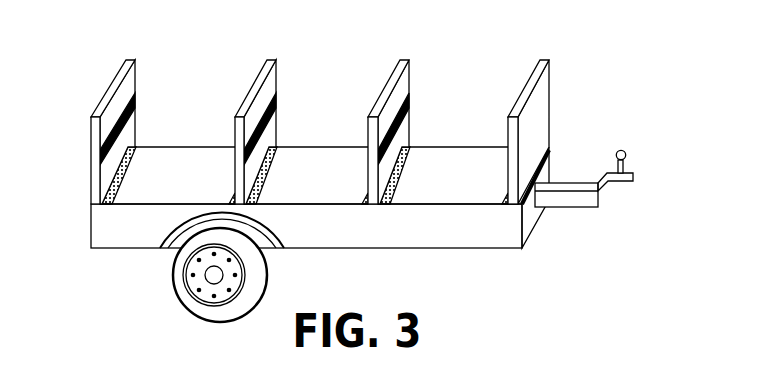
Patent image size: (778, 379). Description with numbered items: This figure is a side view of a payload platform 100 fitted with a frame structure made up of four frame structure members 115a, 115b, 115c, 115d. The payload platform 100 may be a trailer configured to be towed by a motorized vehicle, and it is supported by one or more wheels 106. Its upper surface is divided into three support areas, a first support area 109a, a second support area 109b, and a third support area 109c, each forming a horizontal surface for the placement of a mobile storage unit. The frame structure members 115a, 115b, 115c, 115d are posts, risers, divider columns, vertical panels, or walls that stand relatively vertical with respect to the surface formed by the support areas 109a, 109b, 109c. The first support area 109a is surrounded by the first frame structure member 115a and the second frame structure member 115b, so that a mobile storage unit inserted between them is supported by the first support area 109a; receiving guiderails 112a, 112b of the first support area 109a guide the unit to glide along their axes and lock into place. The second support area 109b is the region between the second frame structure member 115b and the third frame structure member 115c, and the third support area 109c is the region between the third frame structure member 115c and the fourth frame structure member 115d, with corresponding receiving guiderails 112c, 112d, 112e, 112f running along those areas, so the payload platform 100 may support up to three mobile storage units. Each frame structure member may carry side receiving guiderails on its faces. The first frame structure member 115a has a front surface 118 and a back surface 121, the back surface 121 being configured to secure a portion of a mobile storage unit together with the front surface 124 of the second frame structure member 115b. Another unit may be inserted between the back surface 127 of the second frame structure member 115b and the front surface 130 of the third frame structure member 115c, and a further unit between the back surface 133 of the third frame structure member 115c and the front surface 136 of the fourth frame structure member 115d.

The payload platform 100 is at (77, 276).
The wheel 106 is at (173, 262).
The first support area 109a is at (458, 148).
The second support area 109b is at (330, 137).
The third support area 109c is at (197, 137).
The receiving guiderail 112a is at (507, 204).
The receiving guiderail 112b is at (397, 198).
The receiving guiderail 112c is at (367, 202).
The receiving guiderail 112d is at (277, 163).
The receiving guiderail 112e is at (228, 202).
The receiving guiderail 112f is at (125, 182).
The first frame structure member 115a is at (534, 117).
The second frame structure member 115b is at (393, 117).
The third frame structure member 115c is at (417, 131).
The fourth frame structure member 115d is at (132, 117).
The front surface 118 is at (548, 140).
The back surface 121 is at (508, 123).
The front surface 124 is at (412, 140).
The back surface 127 is at (367, 125).
The front surface 130 is at (273, 140).
The back surface 133 is at (235, 120).
The front surface 136 is at (130, 140).